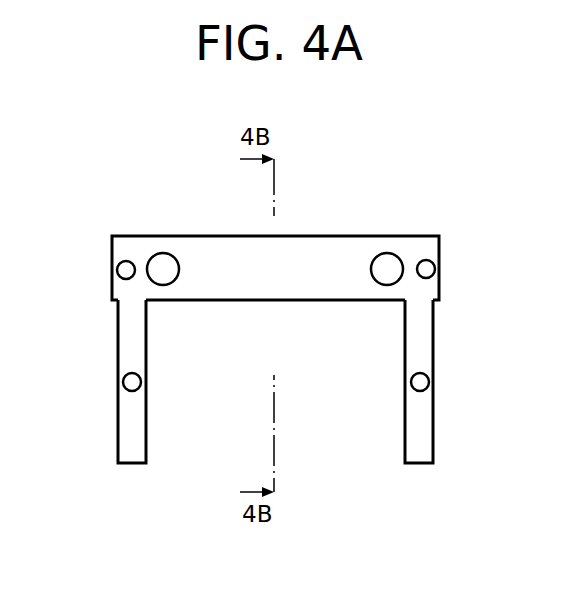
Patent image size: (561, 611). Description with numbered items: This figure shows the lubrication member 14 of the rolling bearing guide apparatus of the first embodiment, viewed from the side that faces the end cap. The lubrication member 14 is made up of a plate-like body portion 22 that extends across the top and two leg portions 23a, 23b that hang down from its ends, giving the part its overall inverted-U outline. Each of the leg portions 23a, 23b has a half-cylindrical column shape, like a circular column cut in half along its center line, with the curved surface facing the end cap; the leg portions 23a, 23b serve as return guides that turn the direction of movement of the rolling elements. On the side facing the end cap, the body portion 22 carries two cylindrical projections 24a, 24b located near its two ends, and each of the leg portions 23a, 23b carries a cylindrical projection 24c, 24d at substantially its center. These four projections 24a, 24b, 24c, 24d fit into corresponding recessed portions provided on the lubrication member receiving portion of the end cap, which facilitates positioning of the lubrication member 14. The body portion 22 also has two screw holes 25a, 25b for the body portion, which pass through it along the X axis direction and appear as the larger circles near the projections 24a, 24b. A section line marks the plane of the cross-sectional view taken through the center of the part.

The lubrication member 14 is at (203, 169).
The body portion 22 is at (332, 258).
The leg portion 23a is at (425, 448).
The leg portion 23b is at (128, 448).
The cylindrical projection 24a is at (426, 269).
The cylindrical projection 24b is at (126, 270).
The cylindrical projection 24c is at (420, 382).
The cylindrical projection 24d is at (132, 382).
The screw hole 25a is at (388, 284).
The screw hole 25b is at (164, 284).